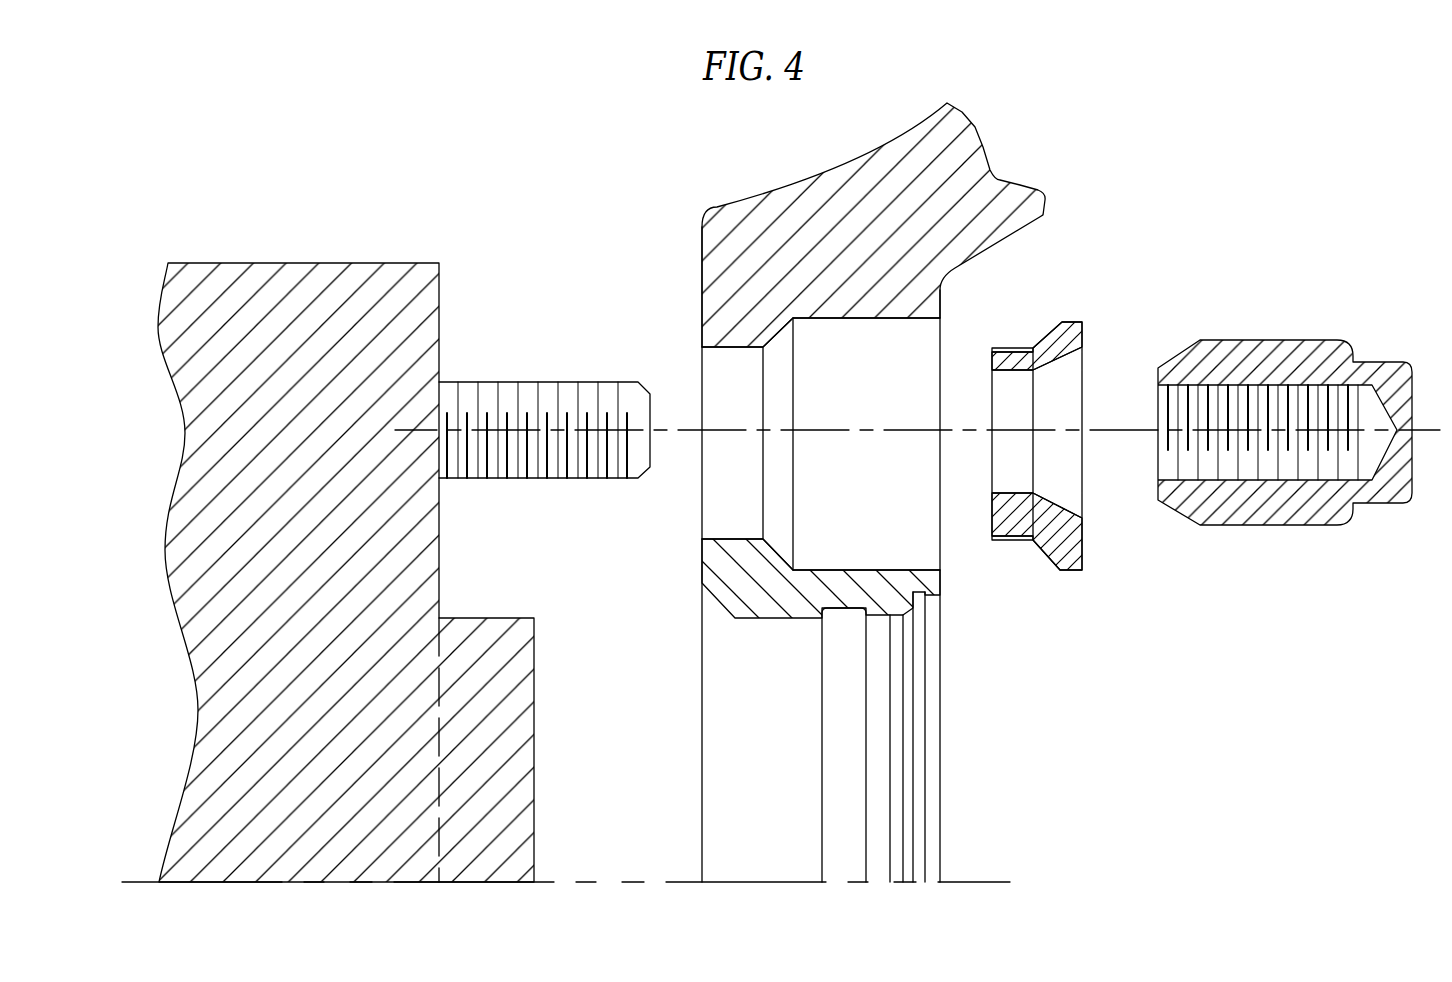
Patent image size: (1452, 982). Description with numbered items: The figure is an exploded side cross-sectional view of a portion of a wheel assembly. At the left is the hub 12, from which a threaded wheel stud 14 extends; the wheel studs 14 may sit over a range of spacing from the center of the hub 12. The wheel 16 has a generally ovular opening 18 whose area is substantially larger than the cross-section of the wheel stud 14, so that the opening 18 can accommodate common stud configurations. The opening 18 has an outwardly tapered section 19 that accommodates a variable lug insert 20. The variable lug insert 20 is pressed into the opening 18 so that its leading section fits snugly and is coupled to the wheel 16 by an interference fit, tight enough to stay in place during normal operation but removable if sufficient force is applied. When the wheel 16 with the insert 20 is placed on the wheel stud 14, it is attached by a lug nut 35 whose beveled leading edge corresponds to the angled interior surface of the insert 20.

The hub 12 is at (345, 292).
The wheel stud 14 is at (557, 382).
The wheel 16 is at (813, 205).
The opening 18 is at (897, 362).
The outwardly tapered section 19 is at (770, 325).
The variable lug insert 20 is at (1040, 587).
The lug nut 35 is at (1255, 545).